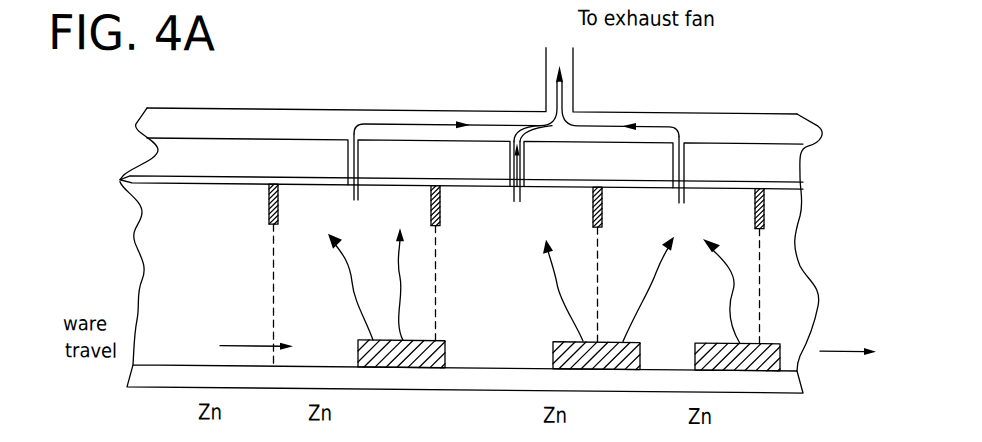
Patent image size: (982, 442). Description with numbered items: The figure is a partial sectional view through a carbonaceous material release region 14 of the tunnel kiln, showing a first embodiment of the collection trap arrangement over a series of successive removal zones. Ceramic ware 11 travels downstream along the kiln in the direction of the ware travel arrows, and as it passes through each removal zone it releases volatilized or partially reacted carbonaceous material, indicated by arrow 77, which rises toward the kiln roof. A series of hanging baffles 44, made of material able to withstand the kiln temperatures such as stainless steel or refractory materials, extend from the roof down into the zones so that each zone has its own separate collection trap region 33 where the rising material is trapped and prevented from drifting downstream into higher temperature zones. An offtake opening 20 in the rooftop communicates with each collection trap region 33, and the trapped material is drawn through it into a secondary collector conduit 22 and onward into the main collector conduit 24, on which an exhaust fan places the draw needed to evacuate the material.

The ceramic ware 11 is at (398, 358).
The carbonaceous material release region 14 is at (108, 376).
The offtake opening 20 is at (354, 192).
The secondary collector conduit 22 is at (346, 157).
The main collector conduit 24 is at (422, 108).
The collection trap region 33 is at (298, 201).
The hanging baffle 44 is at (269, 208).
The released carbonaceous material arrow 77 is at (353, 266).